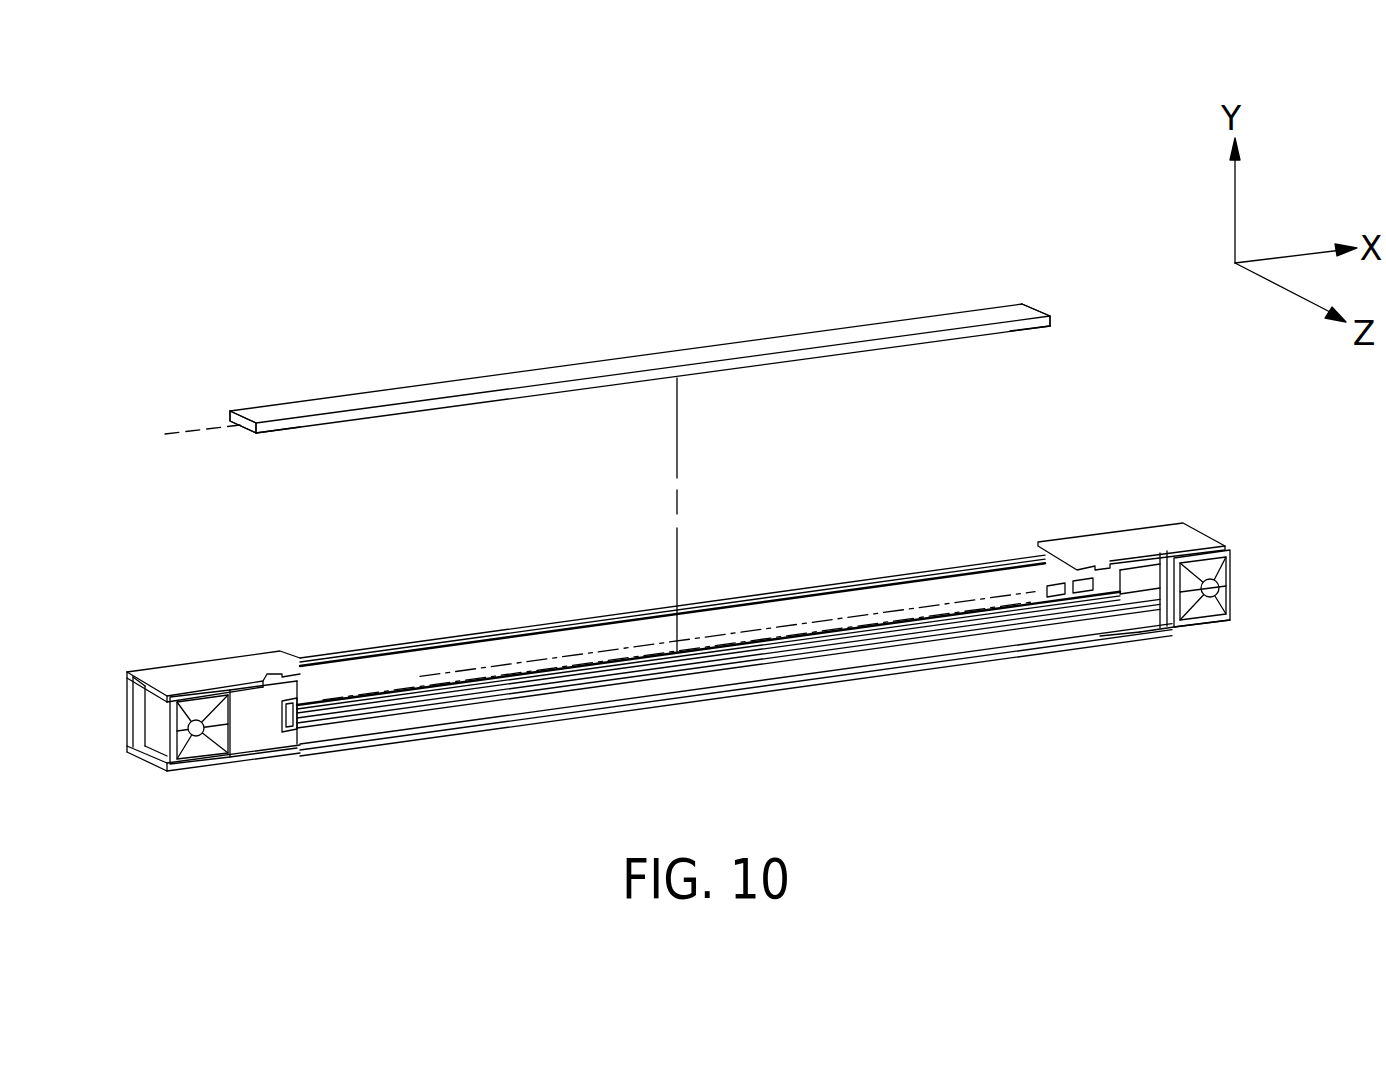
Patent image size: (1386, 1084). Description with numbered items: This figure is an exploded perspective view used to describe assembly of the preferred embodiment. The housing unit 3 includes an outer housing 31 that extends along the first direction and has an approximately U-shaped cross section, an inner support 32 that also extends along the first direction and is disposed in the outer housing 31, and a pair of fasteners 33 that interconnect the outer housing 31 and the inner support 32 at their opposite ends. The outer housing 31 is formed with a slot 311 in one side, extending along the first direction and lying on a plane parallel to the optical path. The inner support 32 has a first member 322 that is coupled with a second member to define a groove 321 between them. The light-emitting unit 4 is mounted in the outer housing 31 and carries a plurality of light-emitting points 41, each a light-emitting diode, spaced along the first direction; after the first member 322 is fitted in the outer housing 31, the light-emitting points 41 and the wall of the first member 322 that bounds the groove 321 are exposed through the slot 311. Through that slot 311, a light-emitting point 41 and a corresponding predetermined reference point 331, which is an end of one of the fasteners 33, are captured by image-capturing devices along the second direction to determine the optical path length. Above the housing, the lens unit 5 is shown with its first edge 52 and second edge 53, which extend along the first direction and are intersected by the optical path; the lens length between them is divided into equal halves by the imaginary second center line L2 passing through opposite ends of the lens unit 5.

The housing unit 3 is at (165, 644).
The light-emitting unit 4 is at (372, 638).
The lens unit 5 is at (785, 325).
The outer housing 31 is at (368, 756).
The inner support 32 is at (148, 748).
The fastener 33 is at (196, 738).
The light-emitting point 41 is at (1055, 598).
The first edge 52 is at (228, 410).
The second edge 53 is at (268, 436).
The slot 311 is at (484, 632).
The groove 321 is at (896, 628).
The first member 322 is at (585, 694).
The predetermined reference point 331 is at (205, 736).
The imaginary second center line L2 is at (182, 436).